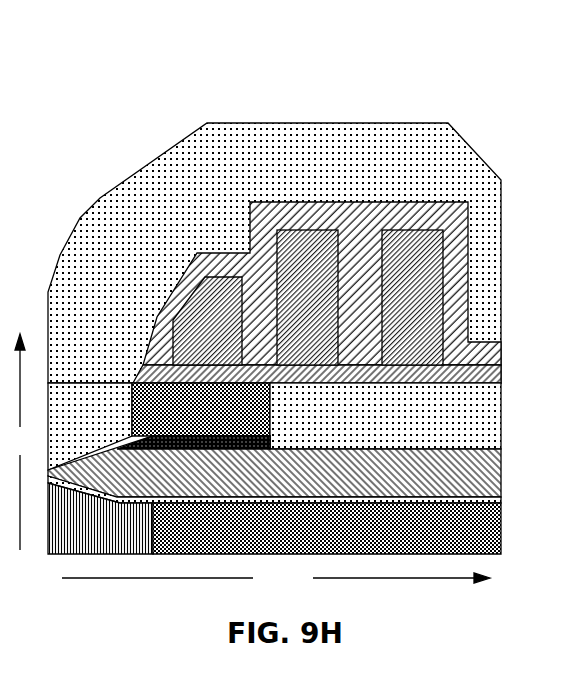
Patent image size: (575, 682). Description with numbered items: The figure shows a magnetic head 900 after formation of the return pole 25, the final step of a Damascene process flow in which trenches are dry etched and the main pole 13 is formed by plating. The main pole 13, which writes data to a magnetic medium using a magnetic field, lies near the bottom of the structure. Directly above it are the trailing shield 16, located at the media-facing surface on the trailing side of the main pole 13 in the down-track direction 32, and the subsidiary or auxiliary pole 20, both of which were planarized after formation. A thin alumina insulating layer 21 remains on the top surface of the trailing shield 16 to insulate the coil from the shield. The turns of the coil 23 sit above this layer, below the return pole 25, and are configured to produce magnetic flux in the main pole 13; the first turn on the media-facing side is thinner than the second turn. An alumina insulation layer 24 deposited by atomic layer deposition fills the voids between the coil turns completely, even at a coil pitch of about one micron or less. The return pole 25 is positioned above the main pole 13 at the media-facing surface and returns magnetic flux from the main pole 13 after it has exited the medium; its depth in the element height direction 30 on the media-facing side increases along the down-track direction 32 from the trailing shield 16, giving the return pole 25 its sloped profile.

The magnetic head 900 is at (218, 90).
The return pole 25 is at (173, 205).
The insulation layer 24 is at (487, 353).
The coil 23 is at (195, 339).
The insulating layer 21 is at (497, 372).
The trailing shield 16 is at (78, 423).
The auxiliary pole 20 is at (362, 427).
The main pole 13 is at (266, 482).
The down-track direction 32 is at (20, 442).
The element height direction 30 is at (276, 578).